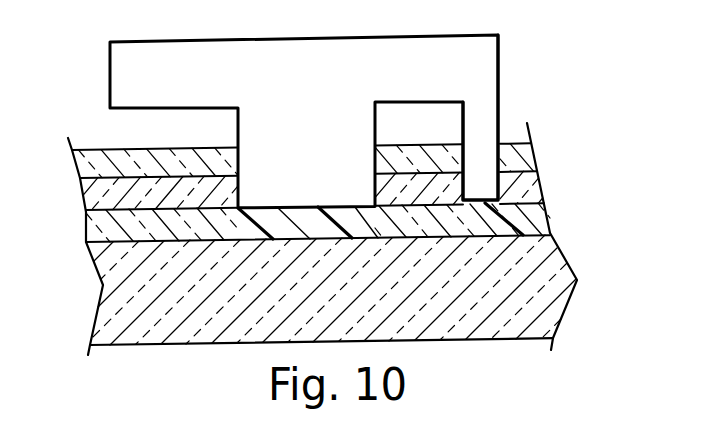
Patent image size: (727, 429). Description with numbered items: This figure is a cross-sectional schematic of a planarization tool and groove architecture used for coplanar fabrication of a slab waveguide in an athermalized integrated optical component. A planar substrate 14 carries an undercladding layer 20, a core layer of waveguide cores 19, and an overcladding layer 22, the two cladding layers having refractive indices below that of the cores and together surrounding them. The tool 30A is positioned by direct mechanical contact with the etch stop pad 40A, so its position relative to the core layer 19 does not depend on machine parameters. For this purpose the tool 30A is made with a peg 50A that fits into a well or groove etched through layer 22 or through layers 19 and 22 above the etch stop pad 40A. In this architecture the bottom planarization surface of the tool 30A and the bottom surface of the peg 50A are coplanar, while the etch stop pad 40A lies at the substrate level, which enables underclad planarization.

The planar substrate 14 is at (117, 310).
The undercladding layer 20 is at (107, 228).
The waveguide cores 19 is at (98, 200).
The overcladding layer 22 is at (97, 165).
The tool 30A is at (305, 53).
The etch stop pad 40A is at (483, 200).
The peg 50A is at (478, 140).